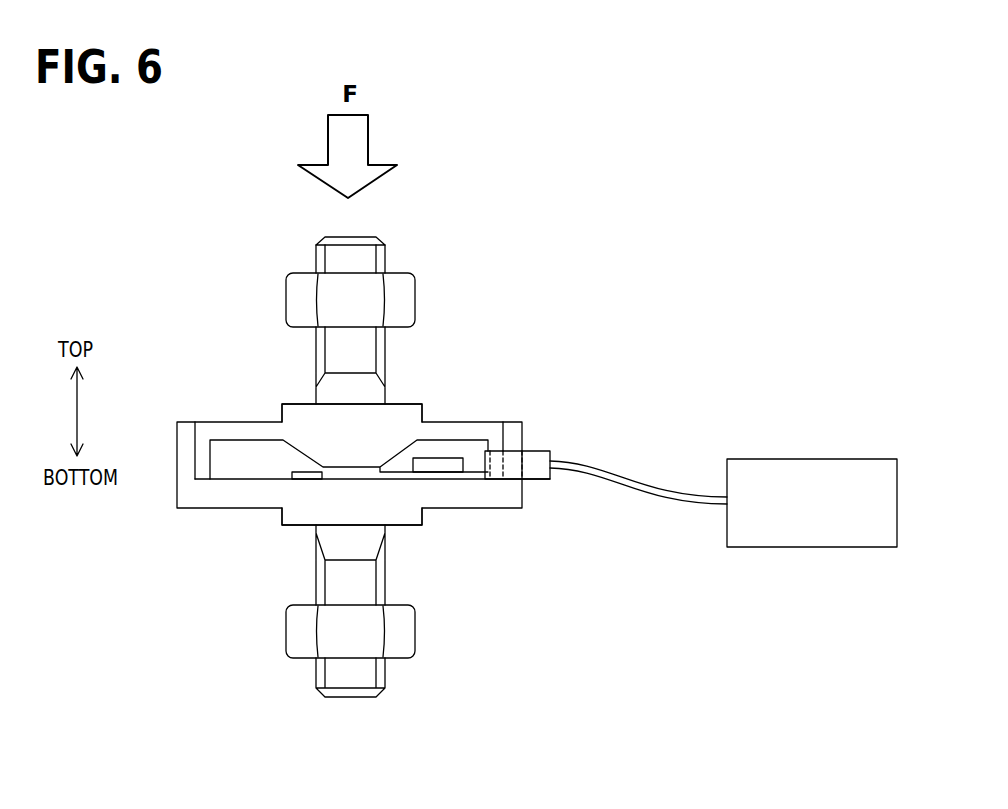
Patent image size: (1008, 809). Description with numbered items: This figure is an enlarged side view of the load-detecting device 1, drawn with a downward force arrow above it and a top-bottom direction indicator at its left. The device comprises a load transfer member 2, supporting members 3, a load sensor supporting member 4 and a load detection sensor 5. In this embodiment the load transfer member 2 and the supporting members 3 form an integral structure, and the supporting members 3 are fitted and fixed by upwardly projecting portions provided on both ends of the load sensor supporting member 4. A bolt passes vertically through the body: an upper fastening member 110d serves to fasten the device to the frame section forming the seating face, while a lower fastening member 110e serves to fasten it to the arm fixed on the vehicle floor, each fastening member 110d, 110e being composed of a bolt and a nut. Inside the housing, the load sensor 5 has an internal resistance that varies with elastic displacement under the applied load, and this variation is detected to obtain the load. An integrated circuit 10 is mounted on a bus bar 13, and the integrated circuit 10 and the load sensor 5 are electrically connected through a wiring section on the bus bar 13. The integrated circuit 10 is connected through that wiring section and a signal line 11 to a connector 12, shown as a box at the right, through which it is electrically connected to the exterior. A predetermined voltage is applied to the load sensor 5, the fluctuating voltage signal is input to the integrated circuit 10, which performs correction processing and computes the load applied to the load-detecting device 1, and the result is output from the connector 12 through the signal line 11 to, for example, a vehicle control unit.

The load-detecting device 1 is at (486, 290).
The load transfer member 2 is at (405, 418).
The supporting members 3 is at (204, 448).
The load sensor supporting member 4 is at (296, 522).
The load detection sensor 5 is at (353, 480).
The integrated circuit 10 is at (442, 460).
The signal line 11 is at (637, 483).
The connector 12 is at (815, 462).
The bus bar 13 is at (548, 479).
The fastening member 110d is at (287, 305).
The fastening member 110e is at (408, 632).